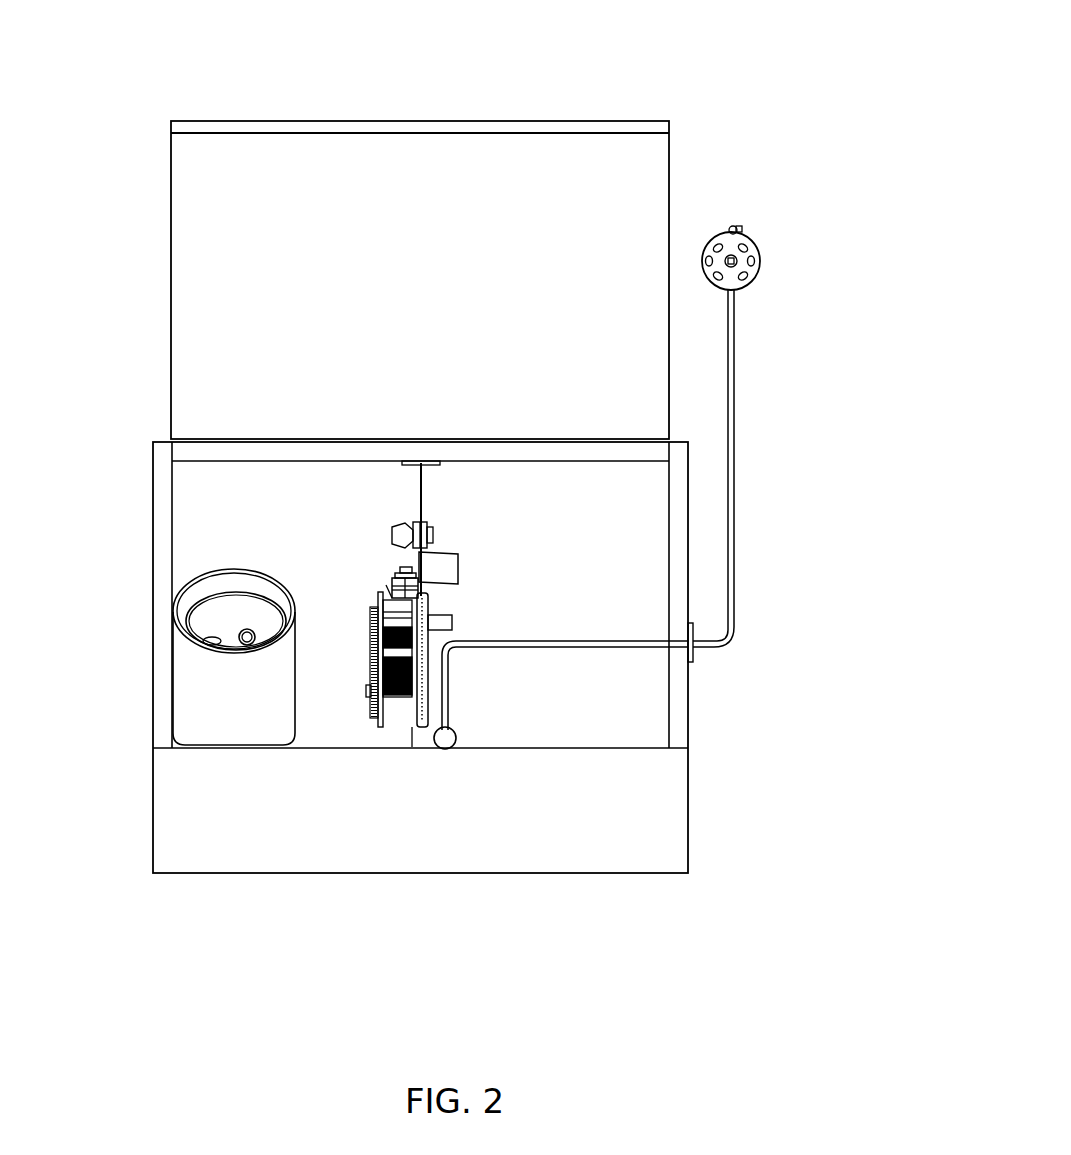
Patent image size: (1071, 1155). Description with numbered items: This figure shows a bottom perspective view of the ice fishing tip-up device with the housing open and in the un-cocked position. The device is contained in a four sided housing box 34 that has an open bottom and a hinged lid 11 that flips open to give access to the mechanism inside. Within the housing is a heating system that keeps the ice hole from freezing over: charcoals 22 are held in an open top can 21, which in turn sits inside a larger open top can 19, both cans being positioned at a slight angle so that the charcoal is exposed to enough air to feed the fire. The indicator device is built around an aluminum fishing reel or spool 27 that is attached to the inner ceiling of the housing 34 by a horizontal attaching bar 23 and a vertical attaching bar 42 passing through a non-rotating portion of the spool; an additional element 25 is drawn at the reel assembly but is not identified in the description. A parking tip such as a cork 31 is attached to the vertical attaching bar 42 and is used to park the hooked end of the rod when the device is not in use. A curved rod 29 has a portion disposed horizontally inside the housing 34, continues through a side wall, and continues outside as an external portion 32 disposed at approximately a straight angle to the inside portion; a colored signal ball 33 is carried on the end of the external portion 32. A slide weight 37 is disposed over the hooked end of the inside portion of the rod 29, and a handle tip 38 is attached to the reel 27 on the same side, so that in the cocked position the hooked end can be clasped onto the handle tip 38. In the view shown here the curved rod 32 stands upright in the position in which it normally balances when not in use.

The hinged lid 11 is at (422, 187).
The larger open top can 19 is at (292, 597).
The open top can 21 is at (198, 603).
The charcoals 22 is at (247, 627).
The horizontal attaching bar 23 is at (383, 581).
The solenoid coil 25 is at (402, 697).
The fishing reel or spool 27 is at (372, 687).
The curved rod 29 is at (565, 648).
The parking tip or cork 31 is at (437, 568).
The curved rod external portion 32 is at (733, 623).
The colored signal ball 33 is at (733, 243).
The housing box 34 is at (688, 810).
The slide weight 37 is at (445, 740).
The handle tip 38 is at (440, 623).
The vertical attaching bar 42 is at (420, 500).